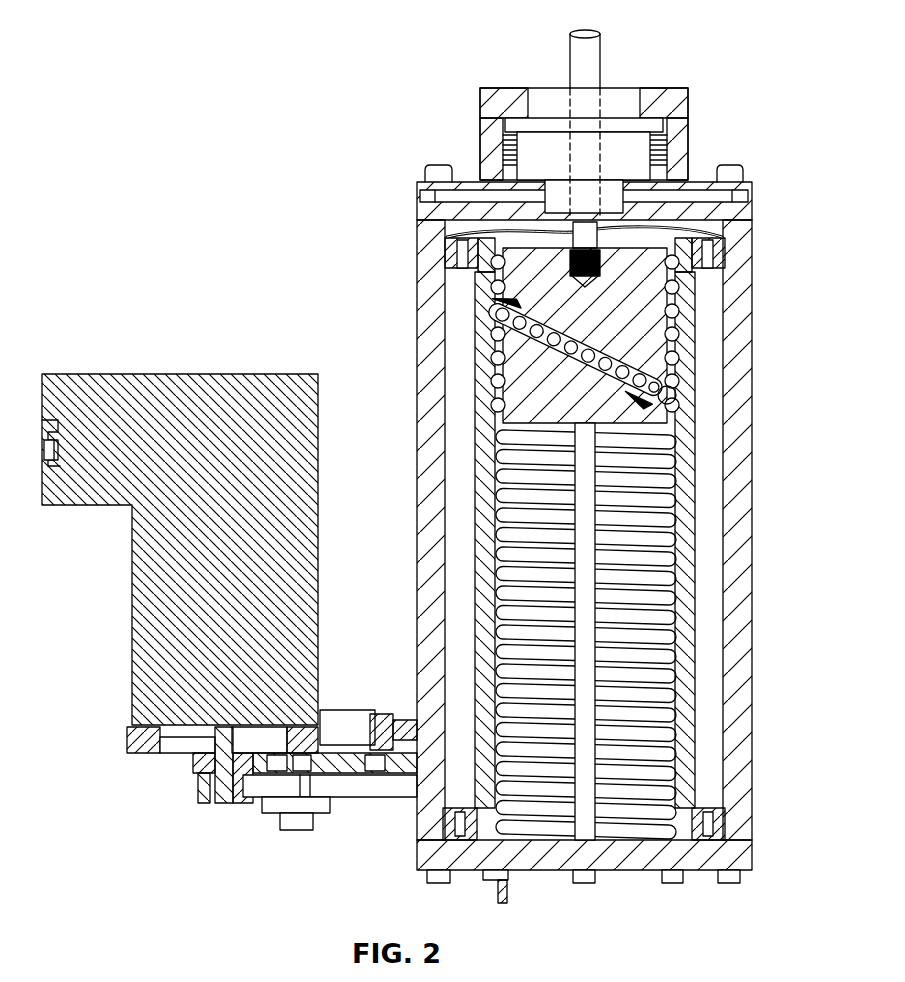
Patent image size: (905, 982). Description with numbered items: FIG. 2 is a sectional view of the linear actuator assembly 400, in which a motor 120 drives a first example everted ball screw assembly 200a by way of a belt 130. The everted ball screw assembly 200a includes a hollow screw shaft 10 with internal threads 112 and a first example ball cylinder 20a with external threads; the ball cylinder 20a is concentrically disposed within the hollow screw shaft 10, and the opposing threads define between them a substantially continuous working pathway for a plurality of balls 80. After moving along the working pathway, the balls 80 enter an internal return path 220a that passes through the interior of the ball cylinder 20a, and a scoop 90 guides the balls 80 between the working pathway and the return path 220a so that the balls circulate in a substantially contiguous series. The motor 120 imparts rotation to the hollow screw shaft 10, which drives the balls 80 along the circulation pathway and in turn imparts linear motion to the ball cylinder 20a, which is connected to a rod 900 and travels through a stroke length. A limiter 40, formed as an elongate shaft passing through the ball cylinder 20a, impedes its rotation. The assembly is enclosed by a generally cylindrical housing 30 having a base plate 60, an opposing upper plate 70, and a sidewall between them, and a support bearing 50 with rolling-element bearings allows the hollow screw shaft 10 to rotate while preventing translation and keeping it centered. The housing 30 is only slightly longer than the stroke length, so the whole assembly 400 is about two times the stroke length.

The hollow screw shaft 10 is at (695, 660).
The first example ball cylinder 20a is at (517, 427).
The housing 30 is at (752, 540).
The limiter 40 is at (597, 780).
The support bearing 50 is at (722, 248).
The base plate 60 is at (742, 874).
The upper plate 70 is at (752, 193).
The balls 80 is at (500, 328).
The scoop 90 is at (672, 395).
The internal threads 112 is at (647, 547).
The motor 120 is at (132, 600).
The belt 130 is at (376, 797).
The internal return path 220a is at (655, 364).
The linear actuator assembly 400 is at (131, 112).
The rod 900 is at (600, 63).
The first example everted ball screw assembly 200a is at (762, 90).